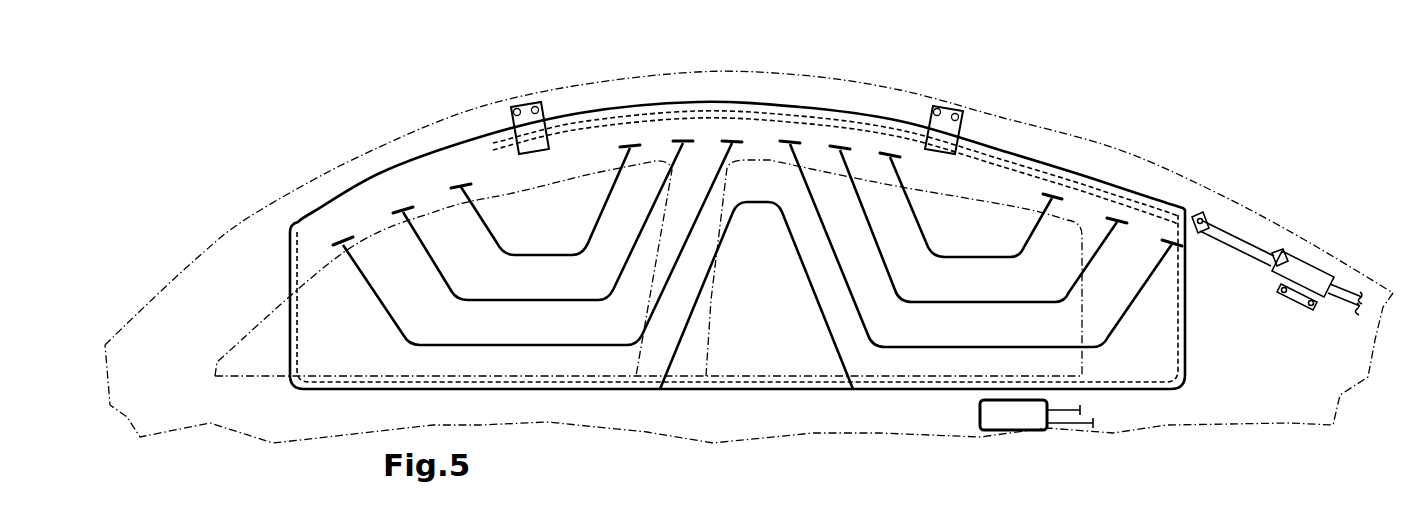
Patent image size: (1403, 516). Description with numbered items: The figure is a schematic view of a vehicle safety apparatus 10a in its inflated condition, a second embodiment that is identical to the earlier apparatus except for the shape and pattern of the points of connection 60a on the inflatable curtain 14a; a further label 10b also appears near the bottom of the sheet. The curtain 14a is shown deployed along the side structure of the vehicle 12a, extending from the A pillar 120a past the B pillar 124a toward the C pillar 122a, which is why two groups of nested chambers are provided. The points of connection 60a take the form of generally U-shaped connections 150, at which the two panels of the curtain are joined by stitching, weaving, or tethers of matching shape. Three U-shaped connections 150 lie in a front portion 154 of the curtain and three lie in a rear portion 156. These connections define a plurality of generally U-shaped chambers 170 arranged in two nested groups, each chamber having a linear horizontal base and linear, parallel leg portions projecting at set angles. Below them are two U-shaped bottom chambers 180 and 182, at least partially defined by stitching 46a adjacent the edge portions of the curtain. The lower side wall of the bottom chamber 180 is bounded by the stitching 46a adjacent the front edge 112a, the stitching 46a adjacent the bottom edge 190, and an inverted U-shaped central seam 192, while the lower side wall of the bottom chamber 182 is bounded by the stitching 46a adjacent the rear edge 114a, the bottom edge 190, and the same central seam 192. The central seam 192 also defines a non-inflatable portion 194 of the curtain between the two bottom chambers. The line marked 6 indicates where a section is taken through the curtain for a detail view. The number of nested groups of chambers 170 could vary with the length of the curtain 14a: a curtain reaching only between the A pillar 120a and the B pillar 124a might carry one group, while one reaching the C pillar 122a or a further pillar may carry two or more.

The apparatus 10a is at (425, 85).
The instrument panel assembly 10b is at (329, 509).
The vehicle 12a is at (345, 180).
The A pillar 120a is at (257, 242).
The C pillar 122a is at (1290, 393).
The B pillar 124a is at (693, 345).
The inflatable curtain 14a is at (312, 345).
The stitching 46a is at (392, 381).
The points of connection 60a is at (512, 208).
The front edge 112a is at (287, 333).
The rear edge 114a is at (1190, 288).
The U-shaped connections 150 is at (940, 173).
The front portion 154 is at (492, 177).
The rear portion 156 is at (1015, 183).
The U-shaped chambers 170 is at (502, 358).
The bottom chamber 180 is at (583, 360).
The bottom chamber 182 is at (987, 362).
The bottom edge 190 is at (577, 390).
The central seam 192 is at (699, 299).
The non-inflatable portion 194 is at (743, 357).
The section line 6- 6 is at (552, 100).